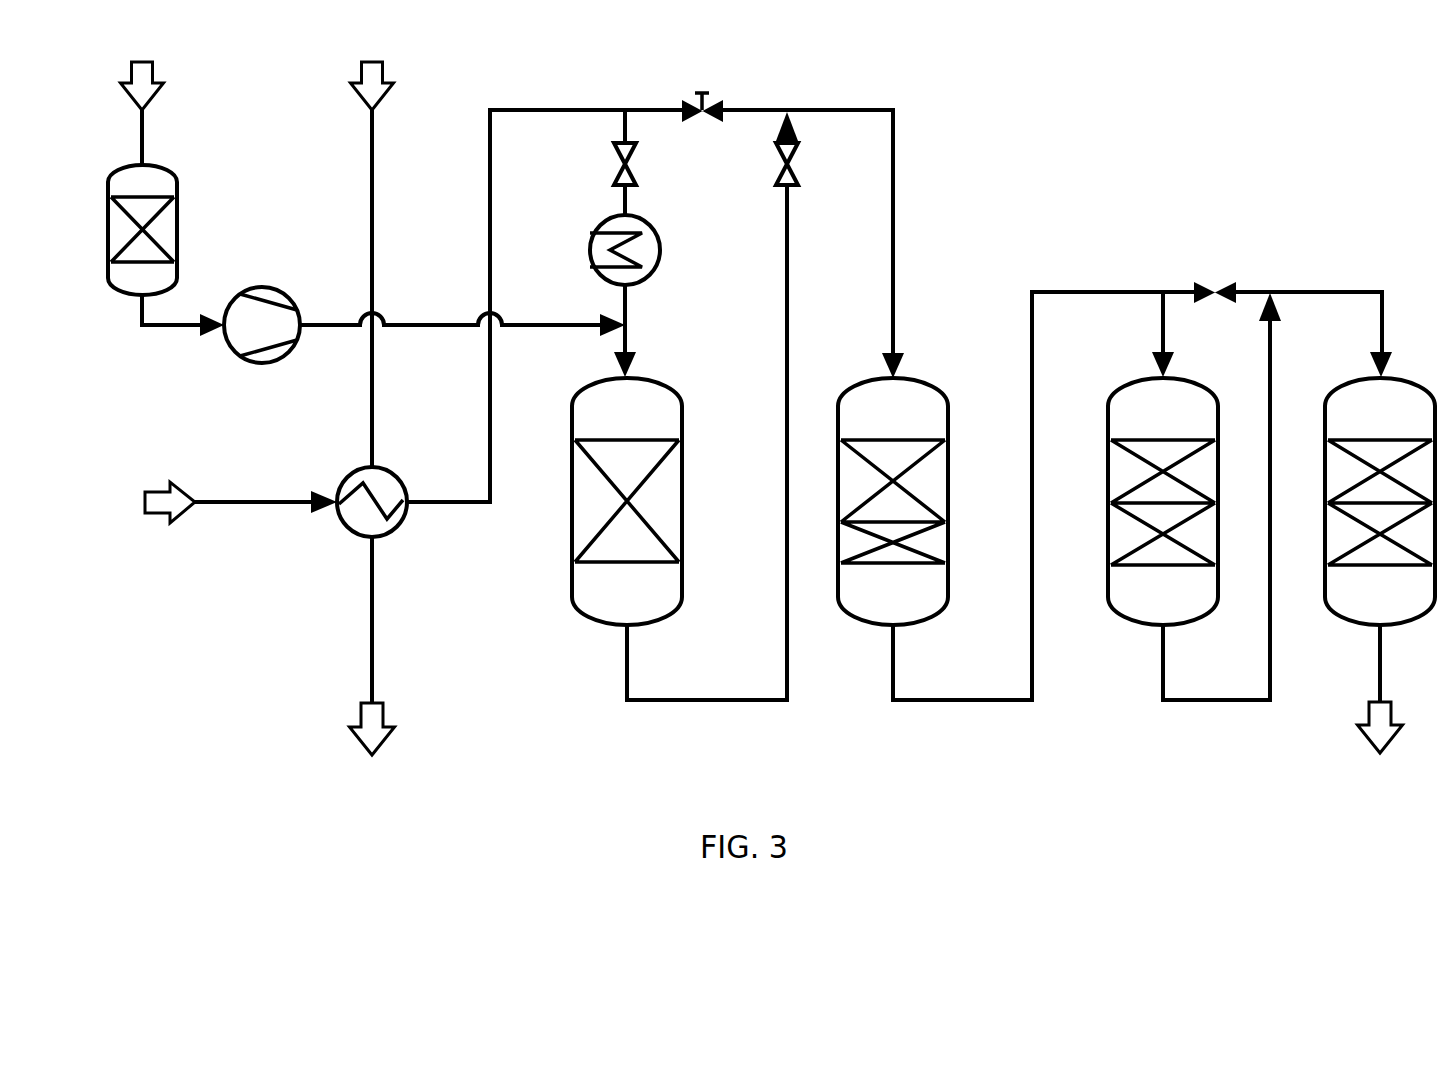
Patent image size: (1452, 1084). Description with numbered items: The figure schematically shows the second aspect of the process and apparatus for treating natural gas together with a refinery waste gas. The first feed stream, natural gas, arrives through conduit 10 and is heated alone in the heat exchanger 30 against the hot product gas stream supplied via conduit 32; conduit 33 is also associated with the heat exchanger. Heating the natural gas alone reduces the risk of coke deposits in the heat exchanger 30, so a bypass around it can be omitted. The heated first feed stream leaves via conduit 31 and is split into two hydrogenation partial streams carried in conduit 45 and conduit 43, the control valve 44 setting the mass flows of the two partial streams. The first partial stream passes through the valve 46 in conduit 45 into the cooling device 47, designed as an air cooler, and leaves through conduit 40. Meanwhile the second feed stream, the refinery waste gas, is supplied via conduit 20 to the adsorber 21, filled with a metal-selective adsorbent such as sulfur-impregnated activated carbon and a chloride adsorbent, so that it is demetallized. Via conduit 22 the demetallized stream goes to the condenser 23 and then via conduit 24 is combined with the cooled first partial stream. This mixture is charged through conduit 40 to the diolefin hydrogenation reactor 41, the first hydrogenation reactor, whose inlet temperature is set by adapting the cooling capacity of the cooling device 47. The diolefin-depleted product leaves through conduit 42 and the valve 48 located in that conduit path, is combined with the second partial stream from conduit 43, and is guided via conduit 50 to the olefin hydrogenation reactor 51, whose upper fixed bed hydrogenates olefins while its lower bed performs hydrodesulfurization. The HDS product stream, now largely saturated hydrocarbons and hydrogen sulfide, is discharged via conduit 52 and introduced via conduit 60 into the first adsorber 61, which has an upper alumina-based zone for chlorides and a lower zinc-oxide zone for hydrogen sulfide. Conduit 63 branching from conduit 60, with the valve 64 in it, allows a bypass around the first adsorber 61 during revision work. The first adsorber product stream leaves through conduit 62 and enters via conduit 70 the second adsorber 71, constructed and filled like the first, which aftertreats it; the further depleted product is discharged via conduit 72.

The conduit 10 is at (234, 502).
The conduit 20 is at (148, 136).
The adsorber 21 is at (177, 232).
The conduit 22 is at (147, 308).
The condenser 23 is at (233, 350).
The conduit 24 is at (425, 325).
The heat exchanger 30 is at (358, 533).
The conduit 31 is at (548, 110).
The conduit 32 is at (372, 163).
The conduit 33 is at (372, 672).
The conduit 40 is at (625, 330).
The diolefin hydrogenation reactor 41 is at (627, 501).
The conduit 42 is at (707, 700).
The conduit 43 is at (757, 108).
The valve 44 is at (703, 125).
The conduit 45 is at (623, 205).
The valve 46 is at (637, 182).
The cooling device 47 is at (662, 248).
The valve 48 is at (800, 163).
The conduit 50 is at (893, 293).
The olefin hydrogenation reactor 51 is at (893, 501).
The conduit 52 is at (962, 700).
The conduit 60 is at (1163, 335).
The adsorber 61 is at (1163, 501).
The conduit 62 is at (1213, 700).
The conduit 63 is at (1255, 290).
The valve 64 is at (1215, 303).
The conduit 70 is at (1377, 302).
The adsorber 71 is at (1380, 501).
The conduit 72 is at (1380, 652).